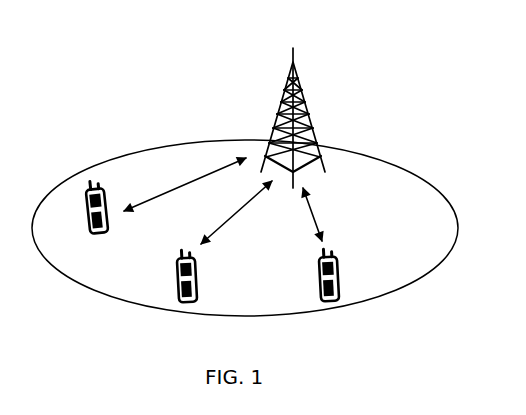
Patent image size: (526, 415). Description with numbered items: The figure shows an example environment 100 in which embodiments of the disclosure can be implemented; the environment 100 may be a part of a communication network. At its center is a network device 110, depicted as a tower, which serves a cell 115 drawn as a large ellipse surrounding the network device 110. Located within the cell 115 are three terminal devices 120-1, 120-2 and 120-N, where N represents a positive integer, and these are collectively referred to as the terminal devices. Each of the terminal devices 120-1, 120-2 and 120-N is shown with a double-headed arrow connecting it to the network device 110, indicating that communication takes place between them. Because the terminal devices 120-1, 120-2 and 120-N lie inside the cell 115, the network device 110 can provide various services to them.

The environment 100 is at (191, 40).
The network device 110 is at (303, 58).
The cell 115 is at (363, 172).
The terminal device 120-1 is at (107, 192).
The terminal device 120-2 is at (200, 264).
The terminal device 120-N is at (342, 264).